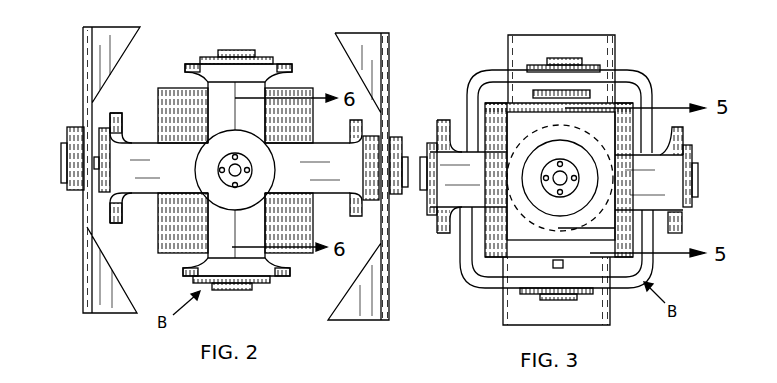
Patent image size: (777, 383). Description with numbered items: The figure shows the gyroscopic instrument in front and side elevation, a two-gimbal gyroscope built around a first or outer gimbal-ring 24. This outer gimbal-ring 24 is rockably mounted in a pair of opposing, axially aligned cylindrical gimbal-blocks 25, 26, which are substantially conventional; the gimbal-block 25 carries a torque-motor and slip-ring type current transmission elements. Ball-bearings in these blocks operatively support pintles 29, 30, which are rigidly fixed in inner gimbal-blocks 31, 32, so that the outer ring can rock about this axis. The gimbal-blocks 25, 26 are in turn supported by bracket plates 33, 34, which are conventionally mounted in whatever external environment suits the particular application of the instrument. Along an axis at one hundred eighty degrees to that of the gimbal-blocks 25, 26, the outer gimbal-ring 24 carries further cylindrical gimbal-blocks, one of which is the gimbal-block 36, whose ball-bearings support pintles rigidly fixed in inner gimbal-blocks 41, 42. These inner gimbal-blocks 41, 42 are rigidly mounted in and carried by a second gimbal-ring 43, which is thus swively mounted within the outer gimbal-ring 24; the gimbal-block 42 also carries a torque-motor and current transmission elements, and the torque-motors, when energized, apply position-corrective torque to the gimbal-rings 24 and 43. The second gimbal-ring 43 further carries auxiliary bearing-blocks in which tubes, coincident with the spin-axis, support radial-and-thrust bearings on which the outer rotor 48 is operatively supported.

In FIG. 2, the outer gimbal-ring 24 is at (156, 185).
In FIG. 3, the outer gimbal-ring 24 is at (653, 204).
In FIG. 2, the gimbal-block 25 is at (73, 128).
In FIG. 3, the gimbal-block 25 is at (596, 187).
In FIG. 2, the gimbal-block 26 is at (372, 150).
In FIG. 2, the pintle 29 is at (96, 163).
In FIG. 2, the pintle 30 is at (378, 165).
In FIG. 2, the inner gimbal-block 31 is at (108, 210).
In FIG. 2, the inner gimbal-block 32 is at (375, 212).
In FIG. 2, the bracket plate 33 is at (86, 300).
In FIG. 3, the bracket plate 33 is at (520, 231).
In FIG. 2, the bracket plate 34 is at (383, 322).
In FIG. 3, the bracket plate 34 is at (512, 302).
In FIG. 3, the cylindrical gimbal-block 36 is at (690, 150).
In FIG. 3, the inner gimbal-block 41 is at (462, 137).
In FIG. 3, the inner gimbal-block 42 is at (660, 150).
In FIG. 2, the second gimbal-ring 43 is at (291, 73).
In FIG. 3, the second gimbal-ring 43 is at (630, 75).
In FIG. 2, the outer rotor 48 is at (162, 112).